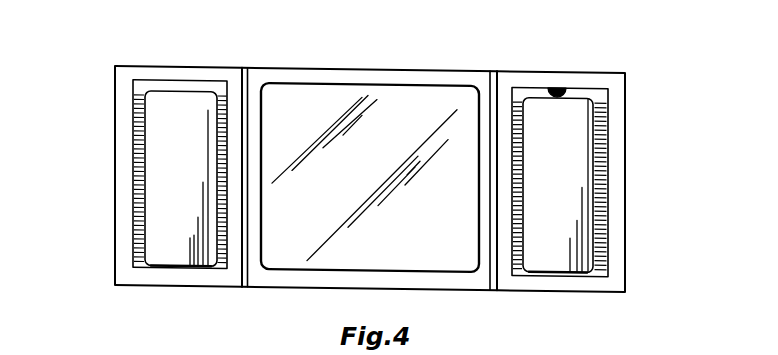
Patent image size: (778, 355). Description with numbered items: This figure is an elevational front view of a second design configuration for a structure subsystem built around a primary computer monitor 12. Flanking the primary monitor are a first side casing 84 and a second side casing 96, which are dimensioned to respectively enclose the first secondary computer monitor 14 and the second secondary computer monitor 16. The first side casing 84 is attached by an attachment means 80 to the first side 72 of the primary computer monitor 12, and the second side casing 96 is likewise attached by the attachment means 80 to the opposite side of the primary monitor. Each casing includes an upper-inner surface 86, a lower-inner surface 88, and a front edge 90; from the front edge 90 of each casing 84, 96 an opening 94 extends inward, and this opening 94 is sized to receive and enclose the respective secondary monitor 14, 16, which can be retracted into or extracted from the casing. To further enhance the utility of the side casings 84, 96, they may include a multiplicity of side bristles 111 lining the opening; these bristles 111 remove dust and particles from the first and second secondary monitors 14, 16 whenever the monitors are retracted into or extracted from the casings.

The primary computer monitor 12 is at (370, 177).
The first secondary computer monitor 14 is at (185, 187).
The second secondary computer monitor 16 is at (562, 185).
The first side 72 is at (244, 70).
The attachment means 80 is at (248, 290).
The first side casing 84 is at (112, 175).
The second side casing 96 is at (629, 171).
The upper-inner surface 86 is at (163, 90).
The lower-inner surface 88 is at (152, 264).
The front edge 90 is at (122, 95).
The opening 94 is at (135, 133).
The side bristles 111 is at (228, 114).